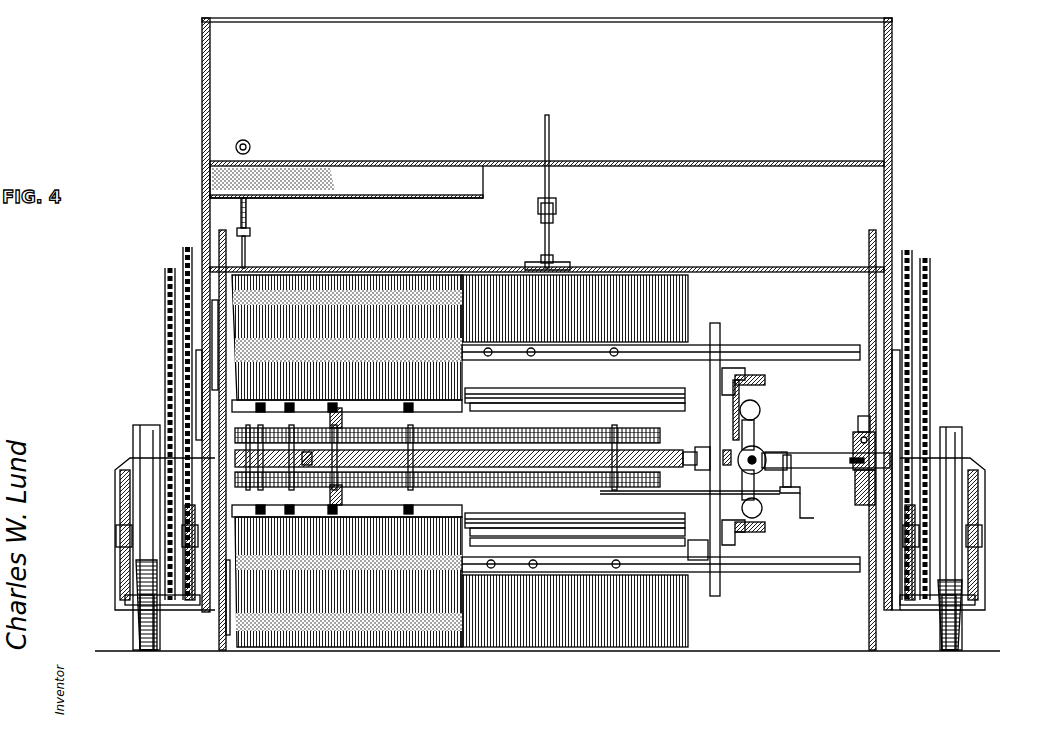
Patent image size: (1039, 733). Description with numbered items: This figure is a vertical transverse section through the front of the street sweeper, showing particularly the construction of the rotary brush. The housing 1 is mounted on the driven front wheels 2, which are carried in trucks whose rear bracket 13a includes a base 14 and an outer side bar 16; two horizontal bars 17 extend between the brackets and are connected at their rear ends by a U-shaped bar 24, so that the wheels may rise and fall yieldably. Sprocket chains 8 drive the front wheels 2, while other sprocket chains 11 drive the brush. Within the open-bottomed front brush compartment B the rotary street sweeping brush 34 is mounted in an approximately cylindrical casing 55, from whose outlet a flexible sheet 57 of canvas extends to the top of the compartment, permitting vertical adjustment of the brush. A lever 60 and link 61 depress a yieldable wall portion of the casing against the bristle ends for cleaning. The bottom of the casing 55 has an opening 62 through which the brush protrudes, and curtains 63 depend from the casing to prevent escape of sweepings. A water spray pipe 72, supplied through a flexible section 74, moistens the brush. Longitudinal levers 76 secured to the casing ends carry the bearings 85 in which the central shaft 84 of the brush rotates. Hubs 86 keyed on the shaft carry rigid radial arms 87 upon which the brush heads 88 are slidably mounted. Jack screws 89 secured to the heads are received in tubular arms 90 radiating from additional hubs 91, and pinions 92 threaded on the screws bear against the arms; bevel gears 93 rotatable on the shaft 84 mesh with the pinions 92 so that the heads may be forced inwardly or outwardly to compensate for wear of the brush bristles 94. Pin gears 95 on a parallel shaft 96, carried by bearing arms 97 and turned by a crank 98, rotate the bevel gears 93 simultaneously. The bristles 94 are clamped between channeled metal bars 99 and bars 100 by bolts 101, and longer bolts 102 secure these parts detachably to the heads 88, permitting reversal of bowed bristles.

The housing 1 is at (892, 198).
The front wheels 2 is at (140, 428).
The sprocket chains 8 is at (930, 310).
The sprocket chains 11 is at (183, 345).
The rear bracket 13a is at (112, 490).
The base 14 is at (130, 605).
The outer side bar 16 is at (118, 505).
The horizontal bars 17 is at (185, 575).
The U-shaped bar 24 is at (170, 615).
The rotary street sweeping brush 34 is at (330, 312).
The casing 55 is at (215, 322).
The flexible sheet 57 is at (358, 188).
The lever 60 is at (550, 138).
The link 61 is at (554, 240).
The opening 62 is at (232, 638).
The curtains 63 is at (222, 640).
The water spray pipe 72 is at (247, 250).
The flexible section 74 is at (248, 215).
The longitudinal levers 76 is at (200, 425).
The central shaft 84 is at (800, 458).
The bearings 85 is at (852, 436).
The hubs 86 is at (702, 447).
The radial arms 87 is at (717, 325).
The brush heads 88 is at (795, 352).
The jack screws 89 is at (752, 372).
The tubular arms 90 is at (760, 412).
The additional hubs 91 is at (780, 452).
The pinions 92 is at (756, 372).
The bevel gears 93 is at (735, 410).
The brush bristles 94 is at (435, 298).
The pin gears 95 is at (740, 500).
The shaft 96 is at (800, 492).
The bearing arms 97 is at (792, 478).
The crank 98 is at (814, 518).
The channeled metal bars 99 is at (672, 480).
The bars 100 is at (612, 440).
The bolts 101 is at (530, 560).
The longer bolts 102 is at (345, 430).
The front brush compartment B is at (738, 266).